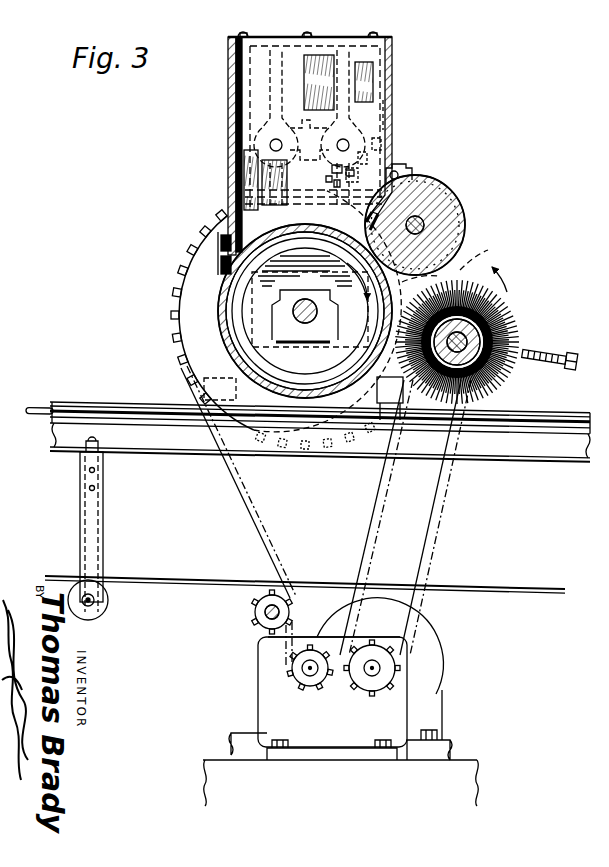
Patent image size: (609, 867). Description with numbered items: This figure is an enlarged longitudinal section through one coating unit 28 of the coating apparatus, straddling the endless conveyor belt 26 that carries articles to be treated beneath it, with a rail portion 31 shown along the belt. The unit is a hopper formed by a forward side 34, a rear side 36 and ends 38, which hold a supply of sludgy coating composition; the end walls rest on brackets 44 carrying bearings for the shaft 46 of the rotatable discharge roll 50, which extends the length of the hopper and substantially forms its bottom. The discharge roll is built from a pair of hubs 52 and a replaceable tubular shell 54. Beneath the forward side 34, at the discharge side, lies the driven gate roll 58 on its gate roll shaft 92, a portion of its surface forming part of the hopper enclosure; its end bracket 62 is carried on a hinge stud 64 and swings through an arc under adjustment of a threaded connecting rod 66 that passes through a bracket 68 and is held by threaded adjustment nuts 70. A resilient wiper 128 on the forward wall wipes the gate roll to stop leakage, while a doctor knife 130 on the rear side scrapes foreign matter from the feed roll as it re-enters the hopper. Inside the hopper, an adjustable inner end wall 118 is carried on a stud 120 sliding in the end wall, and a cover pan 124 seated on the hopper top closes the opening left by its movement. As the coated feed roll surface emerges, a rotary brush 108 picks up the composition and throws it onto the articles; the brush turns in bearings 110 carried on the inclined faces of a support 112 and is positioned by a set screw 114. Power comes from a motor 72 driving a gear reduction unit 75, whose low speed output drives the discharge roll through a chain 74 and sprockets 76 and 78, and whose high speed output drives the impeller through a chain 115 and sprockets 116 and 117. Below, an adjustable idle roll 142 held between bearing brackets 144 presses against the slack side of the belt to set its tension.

The coating unit 28 is at (212, 57).
The rear side 36 is at (228, 97).
The forward side 34 is at (393, 100).
The end 38 is at (362, 54).
The cover pan 124 is at (392, 37).
The adjustable inner end wall 118 is at (368, 86).
The stud 120 is at (270, 141).
The bracket 68 is at (393, 120).
The threaded adjustment nut 70 is at (383, 140).
The threaded connecting rod 66 is at (372, 160).
The resilient wiper 128 is at (393, 170).
The doctor knife 130 is at (222, 254).
The end bracket 62 is at (414, 173).
The gate roll 58 is at (462, 210).
The hinge stud 64 is at (468, 224).
The gate roll shaft 92 is at (466, 211).
The support 112 is at (460, 262).
The bearing 110 is at (488, 262).
The rotary brush 108 is at (503, 297).
The set screw 114 is at (548, 358).
The sprocket 116 is at (600, 350).
The bracket 44 is at (200, 364).
The tubular shell 54 is at (224, 320).
The hub 52 is at (238, 335).
The shaft 46 is at (306, 325).
The discharge roll 50 is at (218, 283).
The sprocket 78 is at (182, 302).
The endless conveyor belt 26 is at (32, 408).
The rail top surface 31 is at (538, 417).
The bearing bracket 144 is at (94, 532).
The adjustable idle roll 142 is at (108, 601).
The chain 74 is at (252, 503).
The chain 115 is at (445, 530).
The gear reduction unit 75 is at (258, 691).
The motor 72 is at (430, 665).
The sprocket 76 is at (318, 685).
The sprocket 117 is at (385, 650).